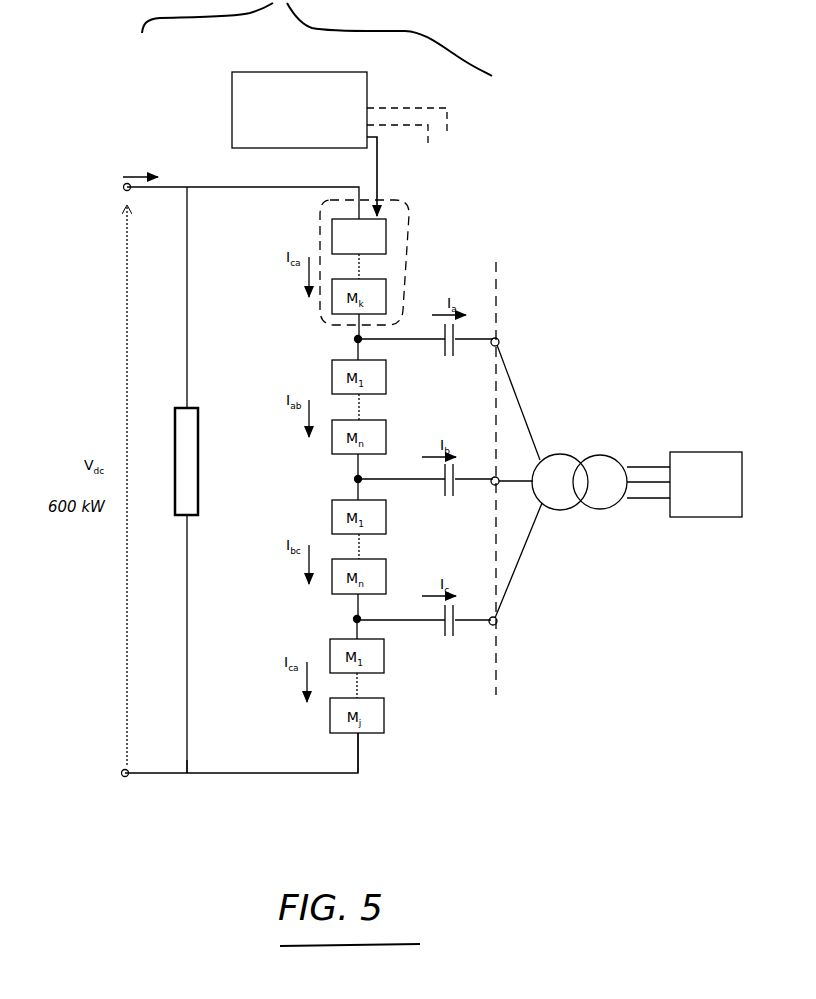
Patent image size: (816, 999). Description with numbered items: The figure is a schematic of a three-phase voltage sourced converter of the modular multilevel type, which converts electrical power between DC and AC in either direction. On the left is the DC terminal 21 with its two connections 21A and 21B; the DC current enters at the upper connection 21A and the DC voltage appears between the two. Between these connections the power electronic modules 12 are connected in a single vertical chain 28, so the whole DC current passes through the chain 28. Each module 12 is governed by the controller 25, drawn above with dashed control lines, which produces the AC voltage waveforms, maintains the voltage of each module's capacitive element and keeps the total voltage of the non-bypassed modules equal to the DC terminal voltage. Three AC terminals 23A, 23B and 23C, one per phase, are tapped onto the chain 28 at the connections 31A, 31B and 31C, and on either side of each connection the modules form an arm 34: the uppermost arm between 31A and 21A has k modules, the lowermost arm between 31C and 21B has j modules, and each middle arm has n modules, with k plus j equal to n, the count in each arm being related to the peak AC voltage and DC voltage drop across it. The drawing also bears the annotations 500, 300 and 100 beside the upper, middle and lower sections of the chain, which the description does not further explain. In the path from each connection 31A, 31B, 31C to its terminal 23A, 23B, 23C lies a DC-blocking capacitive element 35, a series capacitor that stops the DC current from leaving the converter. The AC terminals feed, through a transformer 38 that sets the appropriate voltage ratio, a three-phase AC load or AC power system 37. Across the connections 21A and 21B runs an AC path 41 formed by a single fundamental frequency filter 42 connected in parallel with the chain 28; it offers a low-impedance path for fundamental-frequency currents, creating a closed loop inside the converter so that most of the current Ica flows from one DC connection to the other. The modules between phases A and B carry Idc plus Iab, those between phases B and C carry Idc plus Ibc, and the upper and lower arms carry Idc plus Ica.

The controller 25 is at (232, 103).
The DC terminal 21 is at (118, 832).
The first DC terminal connection 21A is at (118, 187).
The second DC terminal connection 21B is at (118, 782).
The AC path 41 is at (183, 787).
The fundamental frequency filter 42 is at (197, 502).
The power electronic module 12 is at (390, 232).
The arm of modules 34 is at (410, 250).
The chain of modules 28 is at (385, 798).
The first AC connection 31A is at (349, 338).
The second AC connection 31B is at (349, 479).
The third AC connection 31C is at (348, 619).
The DC-blocking capacitive element 35 is at (430, 361).
The first AC terminal 23A is at (503, 337).
The second AC terminal 23B is at (499, 476).
The third AC terminal 23C is at (503, 622).
The transformer 38 is at (588, 516).
The AC power system 37 is at (717, 453).
The upper module branch 500 is at (244, 292).
The middle module branch 300 is at (238, 435).
The lower module branch 100 is at (218, 635).